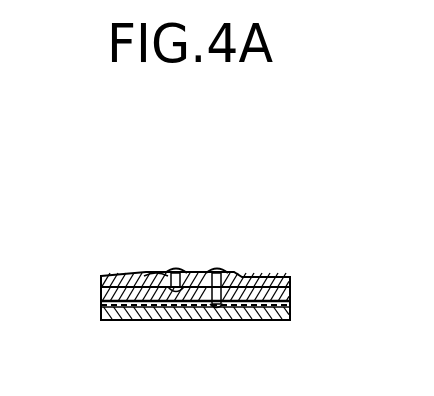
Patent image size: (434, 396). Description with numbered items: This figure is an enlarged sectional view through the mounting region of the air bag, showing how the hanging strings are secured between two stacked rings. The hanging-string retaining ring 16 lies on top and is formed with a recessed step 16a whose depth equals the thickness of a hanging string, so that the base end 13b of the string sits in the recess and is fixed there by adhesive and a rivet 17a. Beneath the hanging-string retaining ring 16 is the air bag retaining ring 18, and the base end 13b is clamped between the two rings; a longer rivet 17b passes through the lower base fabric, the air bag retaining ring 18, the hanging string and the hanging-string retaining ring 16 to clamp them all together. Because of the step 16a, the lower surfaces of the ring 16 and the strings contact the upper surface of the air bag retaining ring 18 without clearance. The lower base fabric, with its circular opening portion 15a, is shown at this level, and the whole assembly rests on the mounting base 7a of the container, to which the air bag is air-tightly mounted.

The hanging-string retaining ring 16 is at (265, 268).
The step 16a is at (148, 263).
The rivet 17a is at (168, 258).
The rivet 17b is at (209, 259).
The air bag retaining ring 18 is at (108, 285).
The base end of hanging string 13b is at (188, 297).
The circular opening portion 15a is at (282, 297).
The mounting base 7a is at (118, 312).